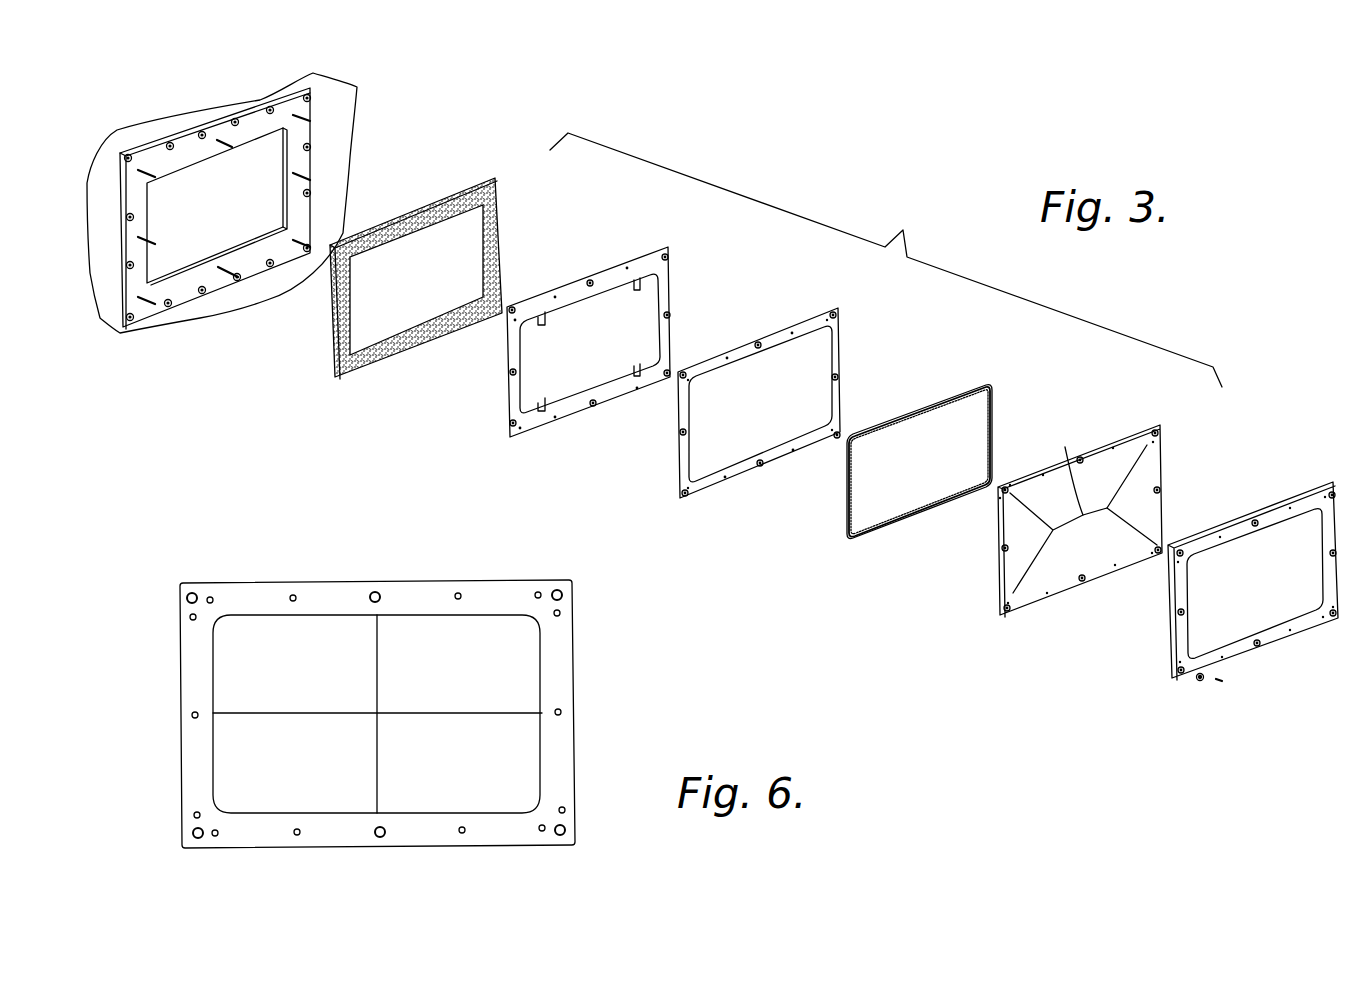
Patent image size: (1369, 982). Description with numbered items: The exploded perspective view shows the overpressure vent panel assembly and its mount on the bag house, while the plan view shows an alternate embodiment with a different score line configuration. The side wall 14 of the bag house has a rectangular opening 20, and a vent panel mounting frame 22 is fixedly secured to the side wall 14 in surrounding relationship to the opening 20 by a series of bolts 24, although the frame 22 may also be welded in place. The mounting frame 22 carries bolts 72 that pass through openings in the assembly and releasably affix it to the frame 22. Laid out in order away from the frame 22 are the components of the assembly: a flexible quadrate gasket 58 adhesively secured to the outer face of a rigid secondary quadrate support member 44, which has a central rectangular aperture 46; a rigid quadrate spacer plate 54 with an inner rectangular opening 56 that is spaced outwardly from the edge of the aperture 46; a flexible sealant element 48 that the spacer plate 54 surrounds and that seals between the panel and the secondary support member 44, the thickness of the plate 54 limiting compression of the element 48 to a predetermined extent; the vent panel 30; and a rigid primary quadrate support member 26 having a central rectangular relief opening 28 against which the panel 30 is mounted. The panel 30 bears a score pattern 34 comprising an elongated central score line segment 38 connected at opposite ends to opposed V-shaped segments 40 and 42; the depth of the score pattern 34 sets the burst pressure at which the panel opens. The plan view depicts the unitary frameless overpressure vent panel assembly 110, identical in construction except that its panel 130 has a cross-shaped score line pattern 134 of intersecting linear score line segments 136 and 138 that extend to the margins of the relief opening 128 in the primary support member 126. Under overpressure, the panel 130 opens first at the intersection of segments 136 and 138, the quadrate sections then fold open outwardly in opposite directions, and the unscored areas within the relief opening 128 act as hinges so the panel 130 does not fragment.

In FIG. 3, the side wall 14 is at (213, 110).
In FIG. 3, the vent panel mounting frame 22 is at (293, 102).
In FIG. 3, the rectangular opening 20 is at (280, 155).
In FIG. 3, the bolts 24 is at (165, 143).
In FIG. 3, the bolts 72 is at (310, 118).
In FIG. 3, the gasket 58 is at (453, 200).
In FIG. 3, the secondary quadrate support member 44 is at (567, 293).
In FIG. 3, the central rectangular aperture 46 is at (550, 307).
In FIG. 3, the spacer plate 54 is at (738, 347).
In FIG. 3, the inner rectangular opening 56 is at (712, 370).
In FIG. 3, the flexible sealant element 48 is at (888, 527).
In FIG. 3, the vent panel 30 is at (1133, 440).
In FIG. 3, the central score line segment 38 is at (1065, 447).
In FIG. 3, the V-shaped segment 42 is at (1137, 468).
In FIG. 3, the V-shaped segment 40 is at (1035, 510).
In FIG. 3, the score pattern 34 is at (1060, 538).
In FIG. 3, the primary quadrate support member 26 is at (1305, 625).
In FIG. 3, the central rectangular relief opening 28 is at (1218, 550).
In FIG. 6, the unitary frameless overpressure vent panel assembly 110 is at (414, 576).
In FIG. 6, the primary support member 126 is at (560, 745).
In FIG. 6, the relief opening 128 is at (538, 770).
In FIG. 6, the panel 130 is at (525, 657).
In FIG. 6, the cross-shaped score line pattern 134 is at (381, 677).
In FIG. 6, the score line segment 136 is at (247, 713).
In FIG. 6, the score line segment 138 is at (378, 753).